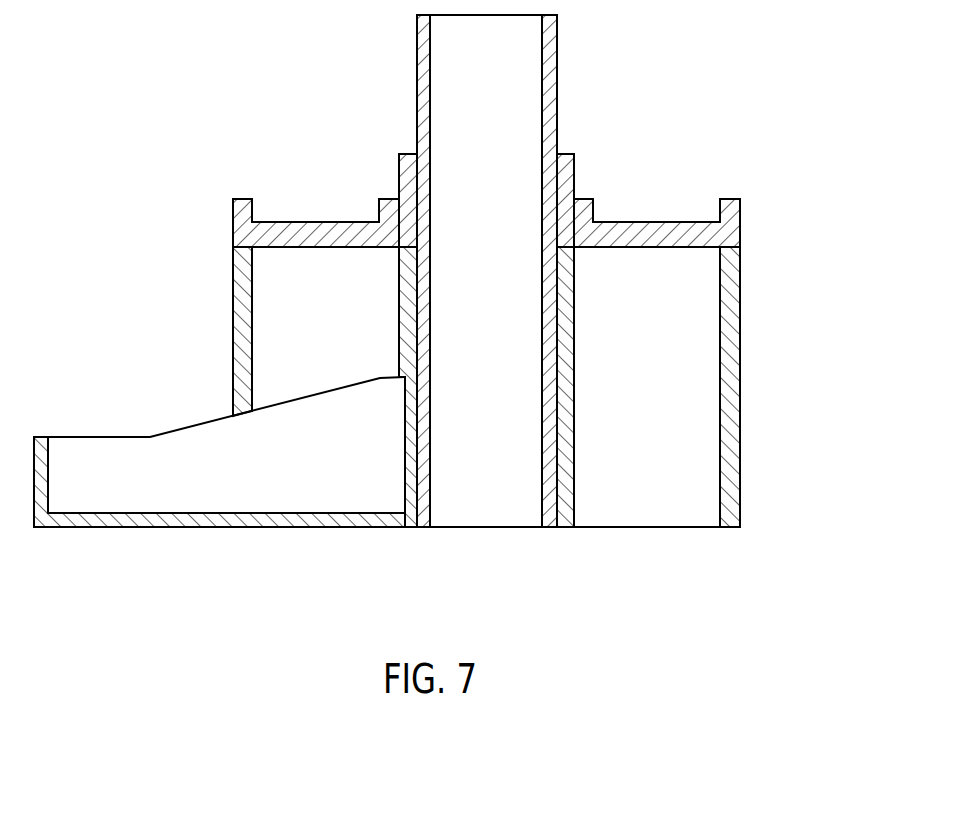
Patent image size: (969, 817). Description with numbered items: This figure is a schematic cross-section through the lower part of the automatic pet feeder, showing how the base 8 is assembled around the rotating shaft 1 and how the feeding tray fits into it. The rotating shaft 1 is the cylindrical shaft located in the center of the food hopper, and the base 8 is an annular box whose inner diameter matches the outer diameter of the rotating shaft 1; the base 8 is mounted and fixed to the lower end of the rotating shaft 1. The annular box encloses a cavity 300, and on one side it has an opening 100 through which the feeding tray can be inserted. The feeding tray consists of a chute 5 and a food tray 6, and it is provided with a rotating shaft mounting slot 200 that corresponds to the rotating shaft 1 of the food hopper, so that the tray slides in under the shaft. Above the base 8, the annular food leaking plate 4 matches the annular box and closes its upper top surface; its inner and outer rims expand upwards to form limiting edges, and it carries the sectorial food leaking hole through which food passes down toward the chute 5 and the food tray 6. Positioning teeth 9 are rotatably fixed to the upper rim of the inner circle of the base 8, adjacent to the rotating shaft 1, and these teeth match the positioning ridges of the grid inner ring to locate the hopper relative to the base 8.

The rotating shaft 1 is at (533, 39).
The food leaking plate 4 is at (740, 210).
The chute 5 is at (329, 392).
The food tray 6 is at (148, 492).
The base 8 is at (740, 483).
The positioning teeth 9 is at (574, 163).
The opening 100 is at (232, 416).
The rotating shaft mounting slot 200 is at (410, 527).
The cavity 300 is at (667, 393).